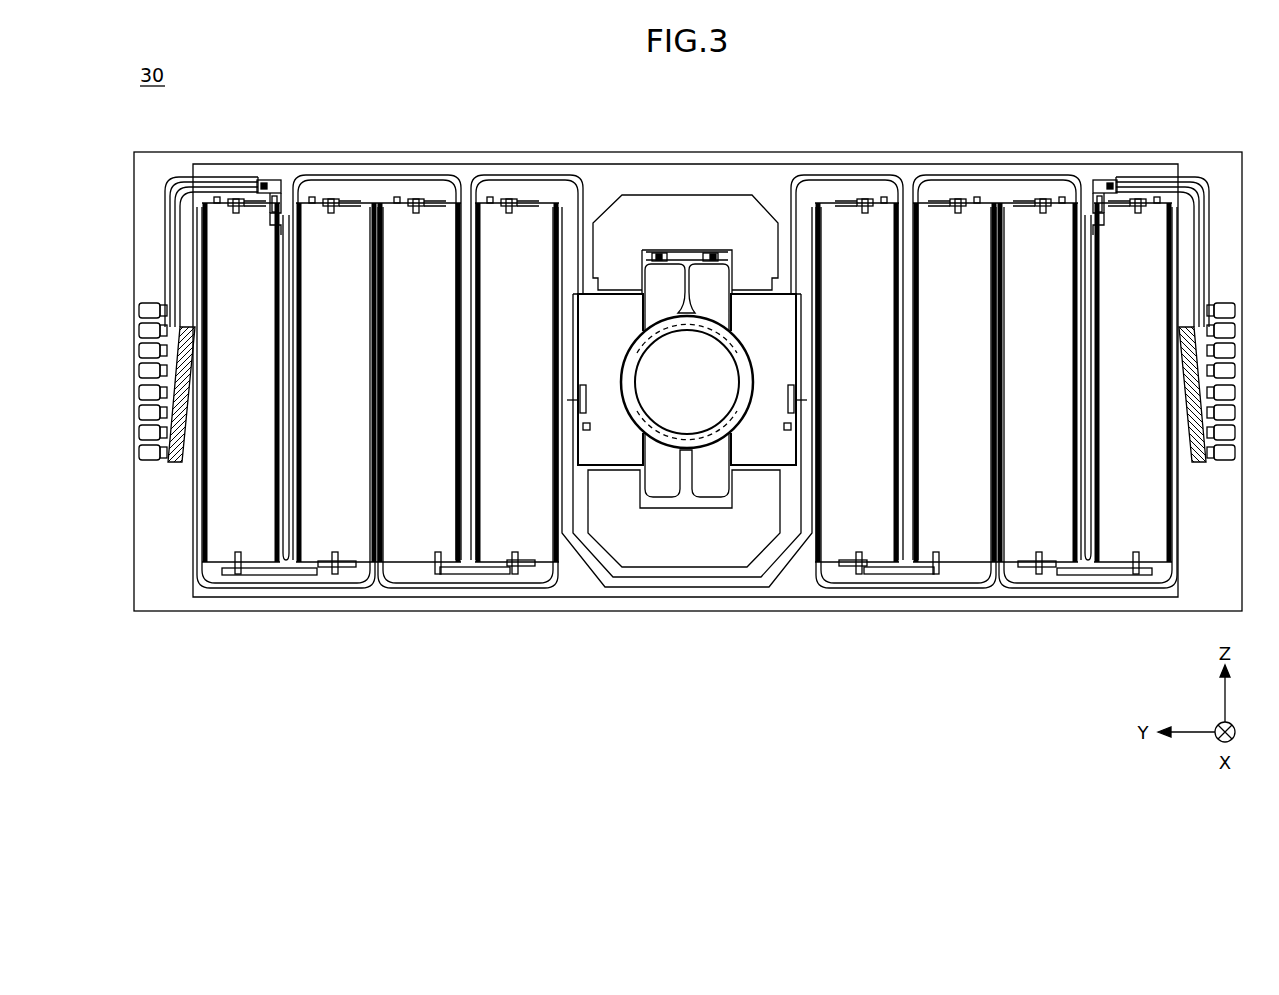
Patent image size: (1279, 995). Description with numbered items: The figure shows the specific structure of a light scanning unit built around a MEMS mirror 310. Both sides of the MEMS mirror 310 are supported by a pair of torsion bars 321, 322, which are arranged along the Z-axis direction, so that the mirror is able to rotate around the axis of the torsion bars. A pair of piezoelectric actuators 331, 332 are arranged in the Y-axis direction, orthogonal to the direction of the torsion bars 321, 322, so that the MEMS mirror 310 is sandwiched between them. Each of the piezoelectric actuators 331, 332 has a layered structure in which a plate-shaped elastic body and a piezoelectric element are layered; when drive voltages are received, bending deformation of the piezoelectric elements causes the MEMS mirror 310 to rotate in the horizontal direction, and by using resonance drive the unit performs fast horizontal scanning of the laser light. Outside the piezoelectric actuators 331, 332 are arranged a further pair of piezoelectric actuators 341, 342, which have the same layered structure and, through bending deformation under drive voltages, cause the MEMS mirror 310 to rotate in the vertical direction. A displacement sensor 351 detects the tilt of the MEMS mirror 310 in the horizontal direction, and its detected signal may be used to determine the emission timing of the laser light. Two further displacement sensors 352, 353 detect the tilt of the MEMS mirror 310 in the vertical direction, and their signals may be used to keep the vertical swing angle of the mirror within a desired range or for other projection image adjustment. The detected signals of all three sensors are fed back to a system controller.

The MEMS mirror 310 is at (692, 402).
The torsion bar 321 is at (685, 468).
The torsion bar 322 is at (683, 289).
The piezoelectric actuator 331 is at (765, 450).
The piezoelectric actuator 332 is at (620, 450).
The piezoelectric actuator 341 is at (837, 572).
The piezoelectric actuator 342 is at (535, 573).
The displacement sensor 351 is at (658, 250).
The displacement sensor 352 is at (1088, 198).
The displacement sensor 353 is at (277, 200).